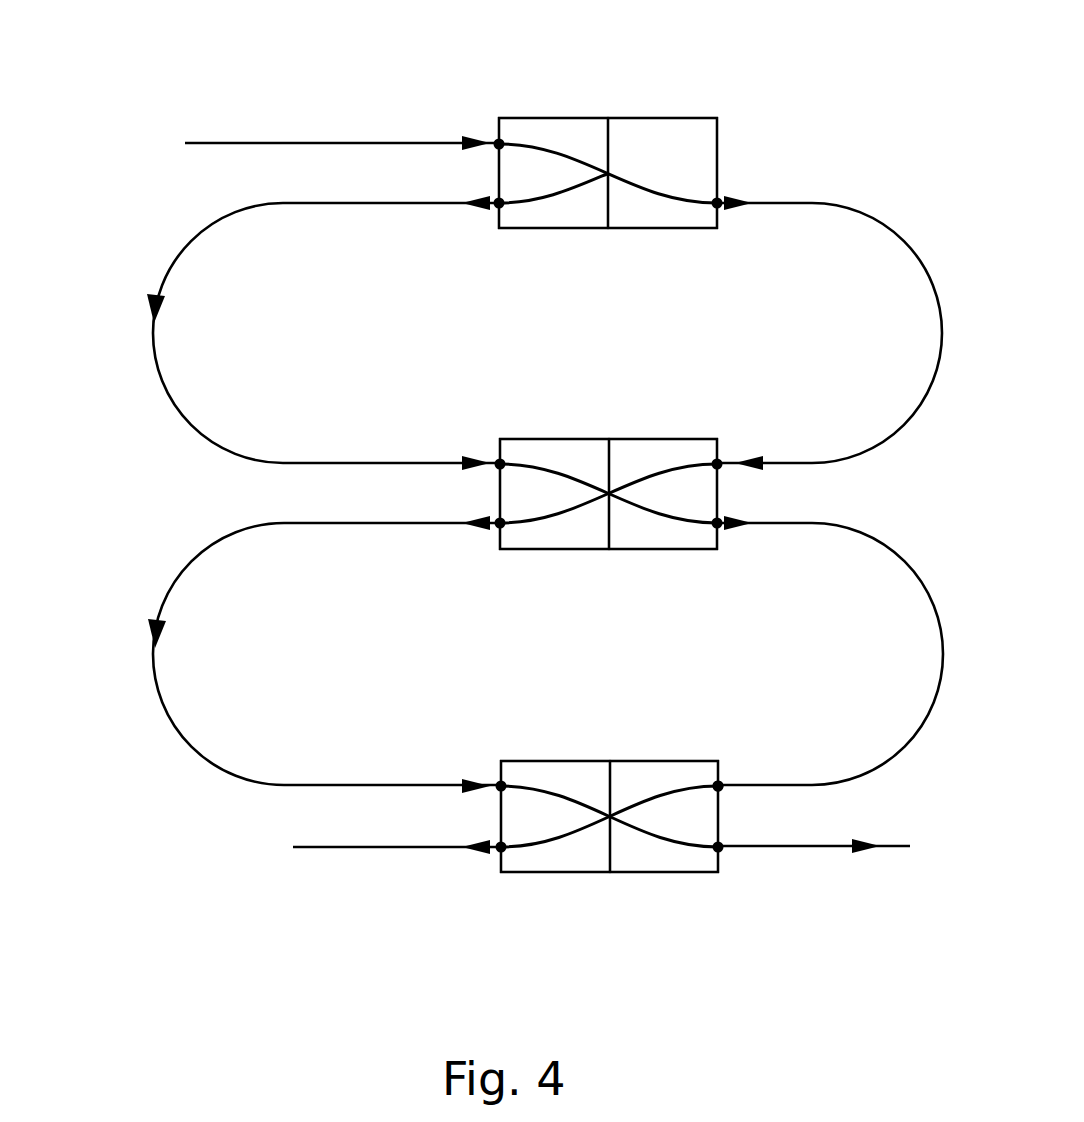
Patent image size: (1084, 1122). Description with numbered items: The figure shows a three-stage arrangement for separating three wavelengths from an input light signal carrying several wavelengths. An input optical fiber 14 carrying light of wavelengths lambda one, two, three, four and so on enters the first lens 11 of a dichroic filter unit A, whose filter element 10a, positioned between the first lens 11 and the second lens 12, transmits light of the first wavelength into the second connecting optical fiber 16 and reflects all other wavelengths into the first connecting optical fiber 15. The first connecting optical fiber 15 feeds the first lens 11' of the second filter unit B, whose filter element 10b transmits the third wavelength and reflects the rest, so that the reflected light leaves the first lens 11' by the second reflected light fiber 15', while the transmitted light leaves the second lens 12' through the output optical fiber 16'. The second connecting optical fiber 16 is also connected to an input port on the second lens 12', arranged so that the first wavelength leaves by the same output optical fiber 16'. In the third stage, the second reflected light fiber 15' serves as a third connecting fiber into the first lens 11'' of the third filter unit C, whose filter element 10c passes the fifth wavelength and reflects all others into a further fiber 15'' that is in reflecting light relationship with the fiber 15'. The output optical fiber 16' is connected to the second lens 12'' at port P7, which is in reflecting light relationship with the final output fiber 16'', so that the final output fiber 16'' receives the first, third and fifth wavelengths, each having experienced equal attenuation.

The input optical fiber 14 is at (240, 143).
The filter element 10a is at (608, 117).
The dichroic filter unit A is at (633, 100).
The first lens 11 is at (550, 214).
The second lens 12 is at (688, 208).
The second connecting optical fiber 16 is at (829, 309).
The first connecting optical fiber 15 is at (282, 343).
The filter element 10b is at (609, 438).
The second filter unit B is at (634, 419).
The first lens 11' is at (550, 534).
The second lens 12' is at (693, 527).
The second reflected light fiber 15' is at (281, 663).
The output optical fiber 16' is at (830, 632).
The filter element 10c is at (610, 760).
The third filter unit C is at (634, 740).
The port P7 is at (718, 784).
The first lens 11'' is at (551, 857).
The second lens 12'' is at (679, 857).
The further fiber 15'' is at (364, 862).
The final output fiber 16'' is at (814, 858).